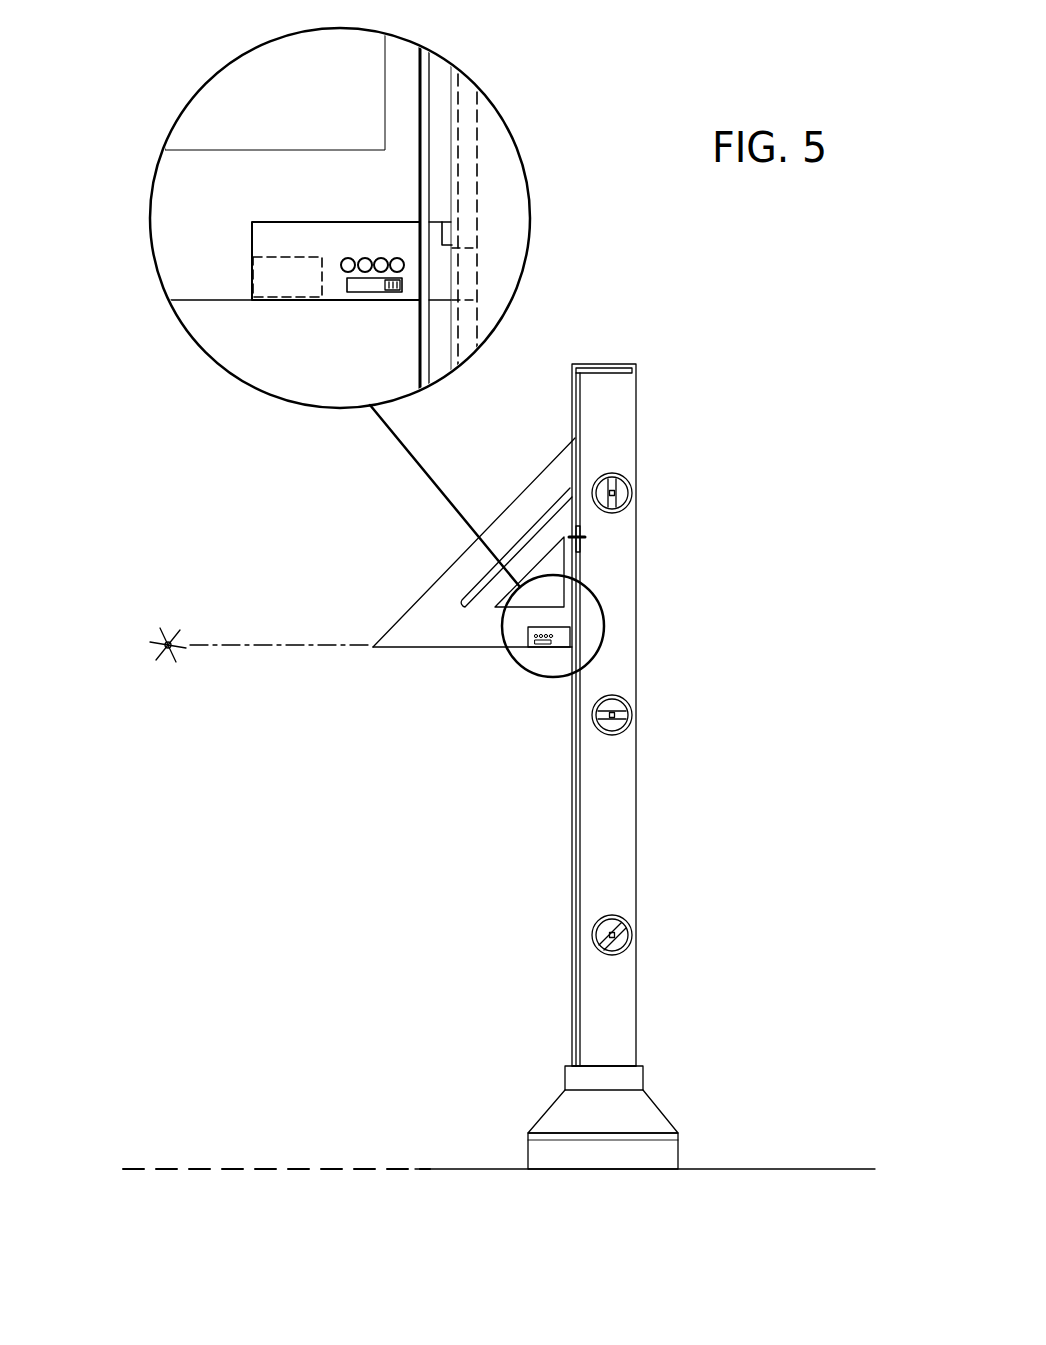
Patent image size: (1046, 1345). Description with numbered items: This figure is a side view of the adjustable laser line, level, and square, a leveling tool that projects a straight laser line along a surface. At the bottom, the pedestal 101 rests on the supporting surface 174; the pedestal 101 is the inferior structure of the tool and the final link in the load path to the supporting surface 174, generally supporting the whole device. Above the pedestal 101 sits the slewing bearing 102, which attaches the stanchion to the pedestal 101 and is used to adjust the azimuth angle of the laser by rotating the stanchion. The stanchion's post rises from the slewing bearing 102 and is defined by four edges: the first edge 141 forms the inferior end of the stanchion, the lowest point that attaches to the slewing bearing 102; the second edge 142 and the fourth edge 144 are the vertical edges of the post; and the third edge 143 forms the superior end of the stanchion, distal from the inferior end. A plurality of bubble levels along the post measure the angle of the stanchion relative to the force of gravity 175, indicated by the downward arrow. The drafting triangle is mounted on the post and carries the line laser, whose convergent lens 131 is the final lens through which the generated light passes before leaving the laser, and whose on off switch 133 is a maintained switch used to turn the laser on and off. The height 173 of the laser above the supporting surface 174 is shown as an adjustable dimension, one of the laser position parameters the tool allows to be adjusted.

The pedestal 101 is at (678, 1148).
The slewing bearing 102 is at (630, 1077).
The convergent lens 131 is at (528, 637).
The on off switch 133 is at (373, 292).
The first edge 141 is at (613, 1063).
The second edge 142 is at (573, 985).
The third edge 143 is at (612, 365).
The fourth edge 144 is at (637, 539).
The height 173 is at (206, 1168).
The supporting surface 174 is at (452, 1169).
The force of gravity 175 is at (59, 288).